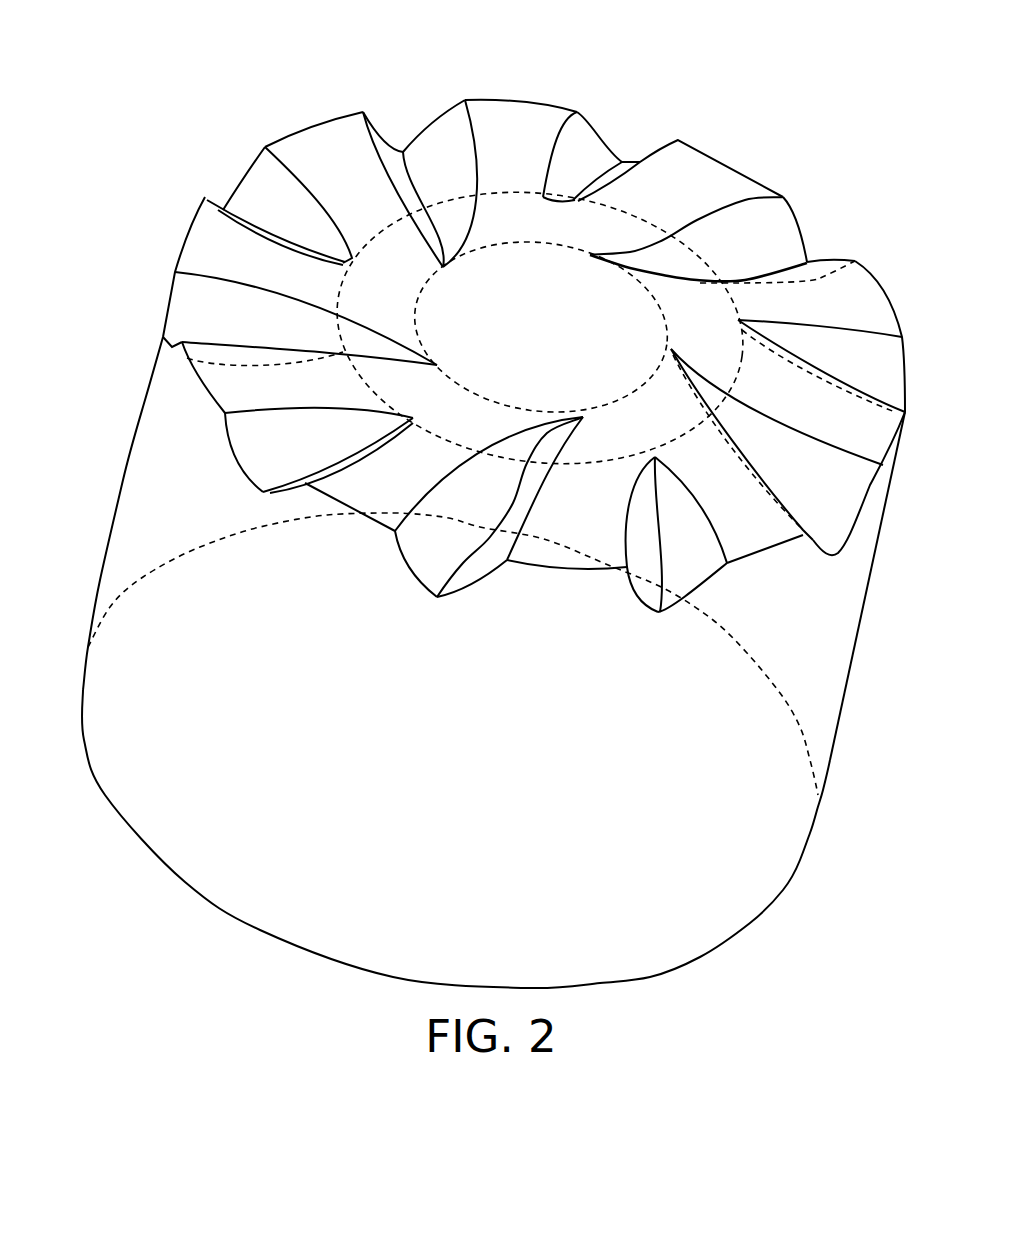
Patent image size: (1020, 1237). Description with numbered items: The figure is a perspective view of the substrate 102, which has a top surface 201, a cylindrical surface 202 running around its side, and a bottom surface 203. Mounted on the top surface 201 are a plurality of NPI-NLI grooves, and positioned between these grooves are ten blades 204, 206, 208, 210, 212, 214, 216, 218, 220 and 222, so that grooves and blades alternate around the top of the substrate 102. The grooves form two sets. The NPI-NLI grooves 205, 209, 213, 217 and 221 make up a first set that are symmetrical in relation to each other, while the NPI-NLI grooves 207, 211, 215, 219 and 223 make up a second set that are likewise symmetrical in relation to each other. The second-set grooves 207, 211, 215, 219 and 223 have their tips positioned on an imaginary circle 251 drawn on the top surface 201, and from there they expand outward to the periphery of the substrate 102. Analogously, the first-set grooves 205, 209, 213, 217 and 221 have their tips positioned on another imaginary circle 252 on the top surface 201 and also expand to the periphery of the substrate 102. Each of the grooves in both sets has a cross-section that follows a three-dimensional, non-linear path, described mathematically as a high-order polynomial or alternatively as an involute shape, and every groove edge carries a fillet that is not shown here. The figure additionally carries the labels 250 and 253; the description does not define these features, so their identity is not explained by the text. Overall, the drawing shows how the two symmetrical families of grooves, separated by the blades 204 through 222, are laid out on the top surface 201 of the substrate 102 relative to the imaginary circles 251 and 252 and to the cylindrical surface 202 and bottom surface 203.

The substrate 102 is at (127, 142).
The top surface 201 is at (517, 78).
The cylindrical surface 202 is at (132, 441).
The bottom surface 203 is at (365, 968).
The blade 204 is at (306, 179).
The NPI-NLI groove 205 is at (253, 221).
The blade 206 is at (226, 279).
The NPI-NLI groove 207 is at (191, 331).
The blade 208 is at (254, 402).
The NPI-NLI groove 209 is at (262, 461).
The blade 210 is at (369, 501).
The NPI-NLI groove 211 is at (419, 554).
The blade 212 is at (559, 536).
The NPI-NLI groove 213 is at (669, 561).
The blade 214 is at (720, 521).
The NPI-NLI groove 215 is at (775, 477).
The blade 216 is at (790, 420).
The NPI-NLI groove 217 is at (815, 364).
The blade 218 is at (822, 311).
The NPI-NLI groove 219 is at (728, 254).
The blade 220 is at (668, 196).
The NPI-NLI groove 221 is at (558, 169).
The blade 222 is at (489, 157).
The NPI-NLI groove 223 is at (416, 184).
The central opening 250 is at (489, 334).
The imaginary circle 251 is at (666, 324).
The imaginary circle 252 is at (733, 306).
The blade tip edge 253 is at (293, 130).